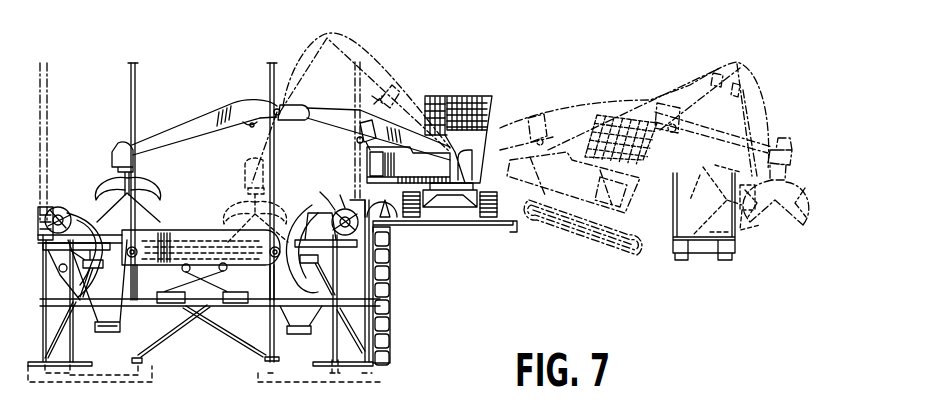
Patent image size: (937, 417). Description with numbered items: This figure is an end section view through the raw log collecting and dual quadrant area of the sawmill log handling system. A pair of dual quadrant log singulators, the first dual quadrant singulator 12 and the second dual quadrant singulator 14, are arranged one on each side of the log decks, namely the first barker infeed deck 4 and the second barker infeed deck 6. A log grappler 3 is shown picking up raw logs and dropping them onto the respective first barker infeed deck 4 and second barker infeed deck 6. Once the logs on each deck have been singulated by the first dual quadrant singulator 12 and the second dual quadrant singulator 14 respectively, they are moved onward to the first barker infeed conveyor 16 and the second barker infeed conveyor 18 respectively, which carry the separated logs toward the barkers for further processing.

The log grappler 3 is at (468, 100).
The first barker infeed deck 4 is at (177, 228).
The second barker infeed deck 6 is at (220, 230).
The first dual quadrant singulator 12 is at (74, 222).
The second dual quadrant singulator 14 is at (342, 214).
The first barker infeed conveyor 16 is at (50, 227).
The second barker infeed conveyor 18 is at (372, 205).